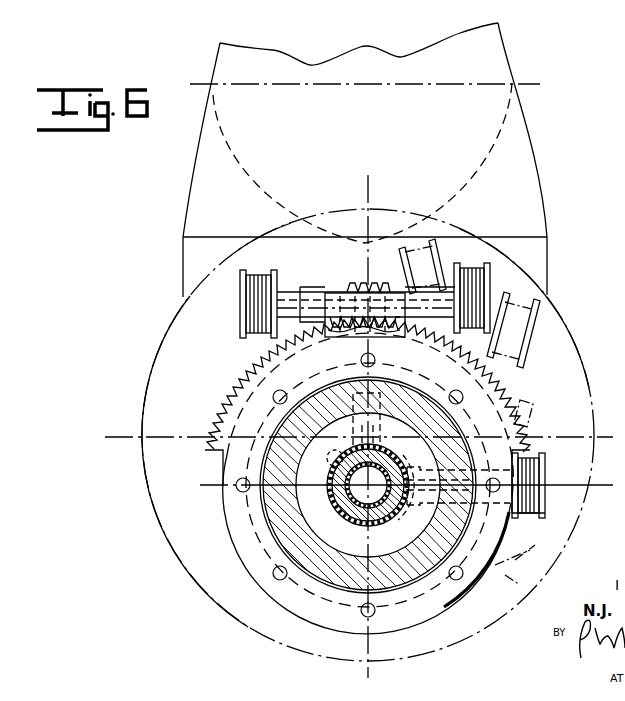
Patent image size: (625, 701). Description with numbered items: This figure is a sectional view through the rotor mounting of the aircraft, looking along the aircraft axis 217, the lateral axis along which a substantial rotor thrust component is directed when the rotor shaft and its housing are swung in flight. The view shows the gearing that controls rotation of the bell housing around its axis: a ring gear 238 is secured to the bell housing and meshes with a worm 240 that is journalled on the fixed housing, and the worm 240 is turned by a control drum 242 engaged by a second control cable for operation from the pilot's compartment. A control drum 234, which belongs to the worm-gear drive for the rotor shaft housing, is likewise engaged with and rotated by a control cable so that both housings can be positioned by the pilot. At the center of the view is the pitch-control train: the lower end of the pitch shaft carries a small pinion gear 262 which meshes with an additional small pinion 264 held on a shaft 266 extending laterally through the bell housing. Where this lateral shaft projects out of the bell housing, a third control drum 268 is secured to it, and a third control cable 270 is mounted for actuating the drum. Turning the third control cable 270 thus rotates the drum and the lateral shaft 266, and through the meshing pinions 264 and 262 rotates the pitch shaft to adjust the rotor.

The aircraft axis 217 is at (536, 85).
The control drum 234 is at (490, 277).
The ring gear 238 is at (238, 378).
The worm 240 is at (357, 285).
The control drum 242 is at (240, 293).
The small pinion gear 262 is at (328, 460).
The small pinion 264 is at (399, 521).
The shaft 266 is at (398, 461).
The third control drum 268 is at (543, 468).
The third control cable 270 is at (523, 508).